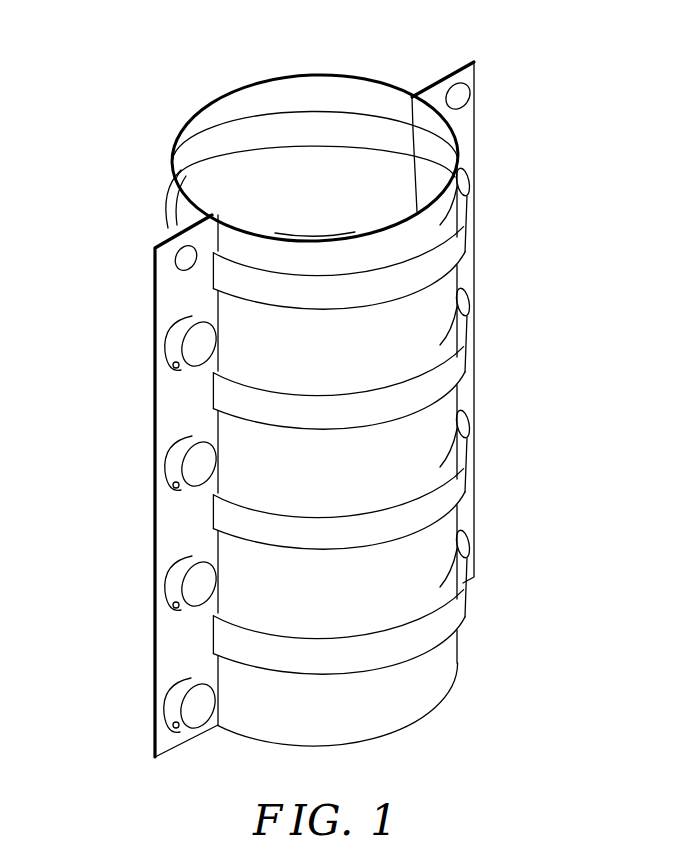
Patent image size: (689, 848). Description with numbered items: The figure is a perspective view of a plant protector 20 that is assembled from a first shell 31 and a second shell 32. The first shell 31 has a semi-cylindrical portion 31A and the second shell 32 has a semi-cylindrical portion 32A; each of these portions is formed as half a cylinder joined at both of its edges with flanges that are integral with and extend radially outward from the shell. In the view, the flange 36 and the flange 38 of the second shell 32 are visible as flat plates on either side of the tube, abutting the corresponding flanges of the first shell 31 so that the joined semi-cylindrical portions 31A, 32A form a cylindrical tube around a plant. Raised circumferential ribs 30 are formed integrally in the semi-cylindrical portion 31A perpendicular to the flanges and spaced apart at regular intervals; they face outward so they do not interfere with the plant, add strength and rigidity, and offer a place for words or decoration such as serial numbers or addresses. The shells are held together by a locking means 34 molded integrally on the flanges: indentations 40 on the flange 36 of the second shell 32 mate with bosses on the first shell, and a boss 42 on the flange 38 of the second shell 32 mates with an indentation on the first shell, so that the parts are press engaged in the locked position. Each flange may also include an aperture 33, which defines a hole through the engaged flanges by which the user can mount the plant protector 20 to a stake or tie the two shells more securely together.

The plant protector 20 is at (160, 203).
The raised circumferential ribs 30 is at (450, 400).
The first shell 31 is at (240, 84).
The semi-cylindrical portion 31A is at (173, 153).
The second shell 32 is at (444, 673).
The semi-cylindrical portion 32A is at (433, 576).
The aperture 33 is at (175, 263).
The locking means 34 is at (165, 578).
The flange 36 is at (175, 413).
The flange 38 is at (477, 267).
The indentation 40 is at (165, 336).
The boss 42 is at (478, 186).